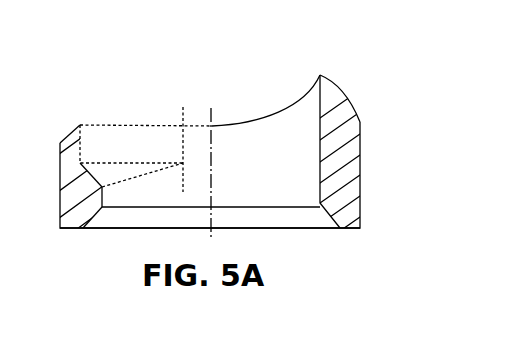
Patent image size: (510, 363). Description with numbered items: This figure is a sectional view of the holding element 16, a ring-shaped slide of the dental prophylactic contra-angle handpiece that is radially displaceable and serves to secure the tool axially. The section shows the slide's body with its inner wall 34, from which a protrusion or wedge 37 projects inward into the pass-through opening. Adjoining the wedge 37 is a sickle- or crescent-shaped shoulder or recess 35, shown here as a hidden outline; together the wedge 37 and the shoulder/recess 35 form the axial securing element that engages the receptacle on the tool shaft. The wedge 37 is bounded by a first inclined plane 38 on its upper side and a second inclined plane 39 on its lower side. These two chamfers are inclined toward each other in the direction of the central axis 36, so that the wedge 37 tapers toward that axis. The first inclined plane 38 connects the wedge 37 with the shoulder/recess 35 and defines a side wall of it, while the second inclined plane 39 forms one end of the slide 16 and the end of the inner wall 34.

The holding element 16 is at (334, 64).
The inner wall 34 is at (282, 183).
The shoulder or recess 35 is at (112, 150).
The central axis 36 is at (211, 110).
The wedge 37 is at (108, 188).
The first inclined plane 38 is at (108, 174).
The second inclined plane 39 is at (113, 228).